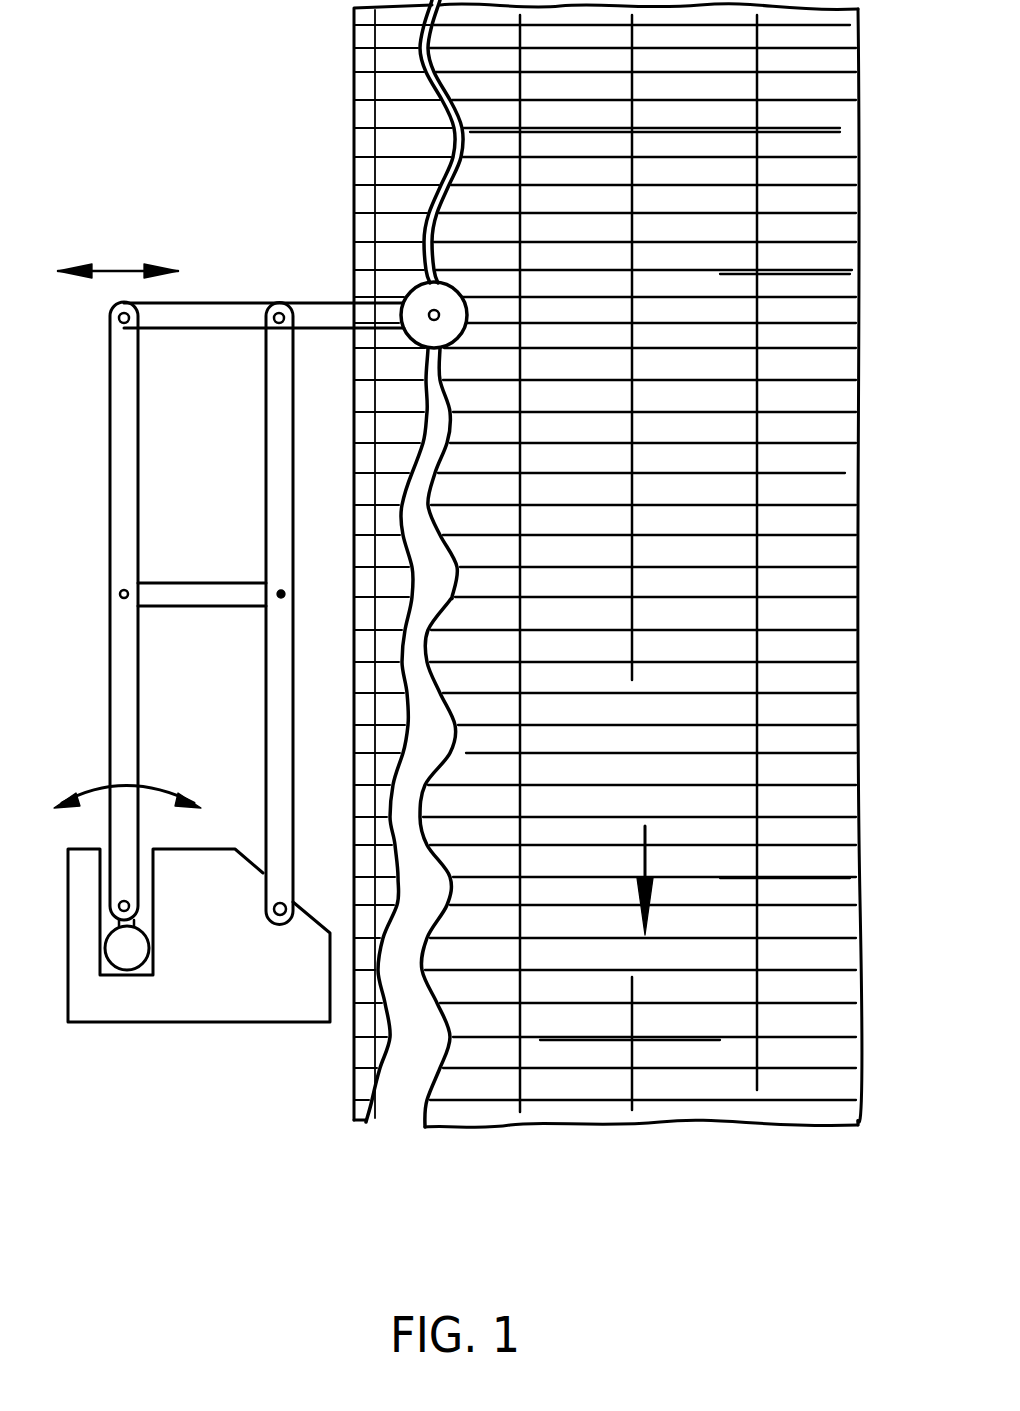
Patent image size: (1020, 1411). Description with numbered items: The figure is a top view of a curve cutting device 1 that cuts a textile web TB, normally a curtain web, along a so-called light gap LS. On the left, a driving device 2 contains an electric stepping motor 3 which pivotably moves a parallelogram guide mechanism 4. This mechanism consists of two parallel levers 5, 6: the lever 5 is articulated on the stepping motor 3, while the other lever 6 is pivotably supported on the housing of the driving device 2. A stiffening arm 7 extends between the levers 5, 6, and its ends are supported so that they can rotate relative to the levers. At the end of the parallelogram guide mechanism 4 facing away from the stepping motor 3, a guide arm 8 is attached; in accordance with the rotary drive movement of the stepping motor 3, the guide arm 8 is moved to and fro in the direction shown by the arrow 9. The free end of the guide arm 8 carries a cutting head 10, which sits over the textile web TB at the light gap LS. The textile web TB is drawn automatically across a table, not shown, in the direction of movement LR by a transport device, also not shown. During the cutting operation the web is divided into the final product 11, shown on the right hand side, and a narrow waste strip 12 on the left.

The curve cutting device 1 is at (124, 212).
The driving device 2 is at (238, 985).
The electric stepping motor 3 is at (127, 975).
The parallelogram guide mechanism 4 is at (130, 706).
The lever 5 is at (130, 660).
The lever 6 is at (283, 657).
The stiffening arm 7 is at (213, 592).
The guide arm 8 is at (218, 312).
The arrow 9 is at (112, 268).
The cutting head 10 is at (428, 310).
The final product 11 is at (500, 1108).
The waste strip 12 is at (360, 1128).
The separation seam line LS is at (458, 118).
The textile web TB is at (593, 606).
The direction of movement LR is at (648, 891).